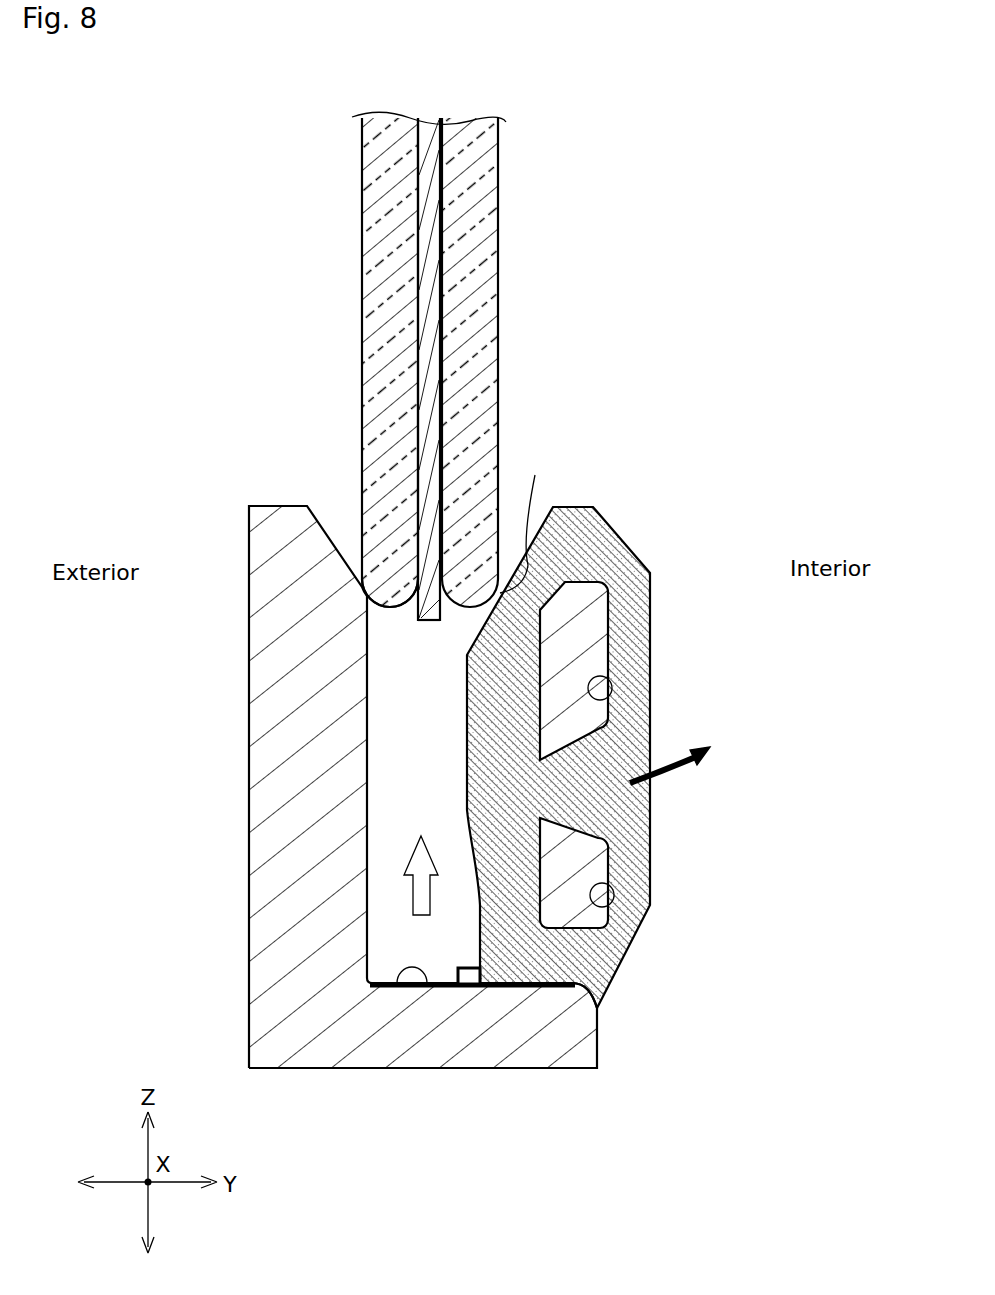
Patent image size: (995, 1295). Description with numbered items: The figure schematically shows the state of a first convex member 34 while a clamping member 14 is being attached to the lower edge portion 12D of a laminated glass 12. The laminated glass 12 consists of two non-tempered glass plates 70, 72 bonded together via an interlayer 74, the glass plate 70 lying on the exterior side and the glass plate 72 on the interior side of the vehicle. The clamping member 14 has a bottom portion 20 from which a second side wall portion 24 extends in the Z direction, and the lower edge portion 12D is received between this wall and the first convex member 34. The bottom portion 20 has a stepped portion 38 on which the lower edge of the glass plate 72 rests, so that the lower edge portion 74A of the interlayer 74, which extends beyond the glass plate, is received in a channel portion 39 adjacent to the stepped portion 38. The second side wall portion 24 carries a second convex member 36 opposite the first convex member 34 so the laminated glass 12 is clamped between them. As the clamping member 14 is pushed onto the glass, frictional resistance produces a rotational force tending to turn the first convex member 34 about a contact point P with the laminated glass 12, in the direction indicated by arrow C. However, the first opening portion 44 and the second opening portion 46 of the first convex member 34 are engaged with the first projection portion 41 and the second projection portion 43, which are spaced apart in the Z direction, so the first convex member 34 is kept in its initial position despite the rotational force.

The laminated glass 12 is at (429, 387).
The glass plate 70 is at (362, 267).
The glass plate 72 is at (498, 266).
The interlayer 74 is at (418, 372).
The lower edge portion of the interlayer 74A is at (436, 622).
The lower edge portion 12D is at (390, 608).
The clamping member 14 is at (391, 782).
The second side wall portion 24 is at (258, 683).
The bottom portion 20 is at (432, 1052).
The first convex member 34 is at (600, 722).
The first projection portion 41 is at (585, 636).
The first opening portion 44 is at (602, 692).
The second projection portion 43 is at (582, 850).
The second opening portion 46 is at (604, 884).
The second convex member 36 is at (367, 772).
The channel portion 39 is at (400, 967).
The stepped portion 38 is at (470, 978).
The contact point P is at (527, 520).
The rotation direction C is at (682, 757).